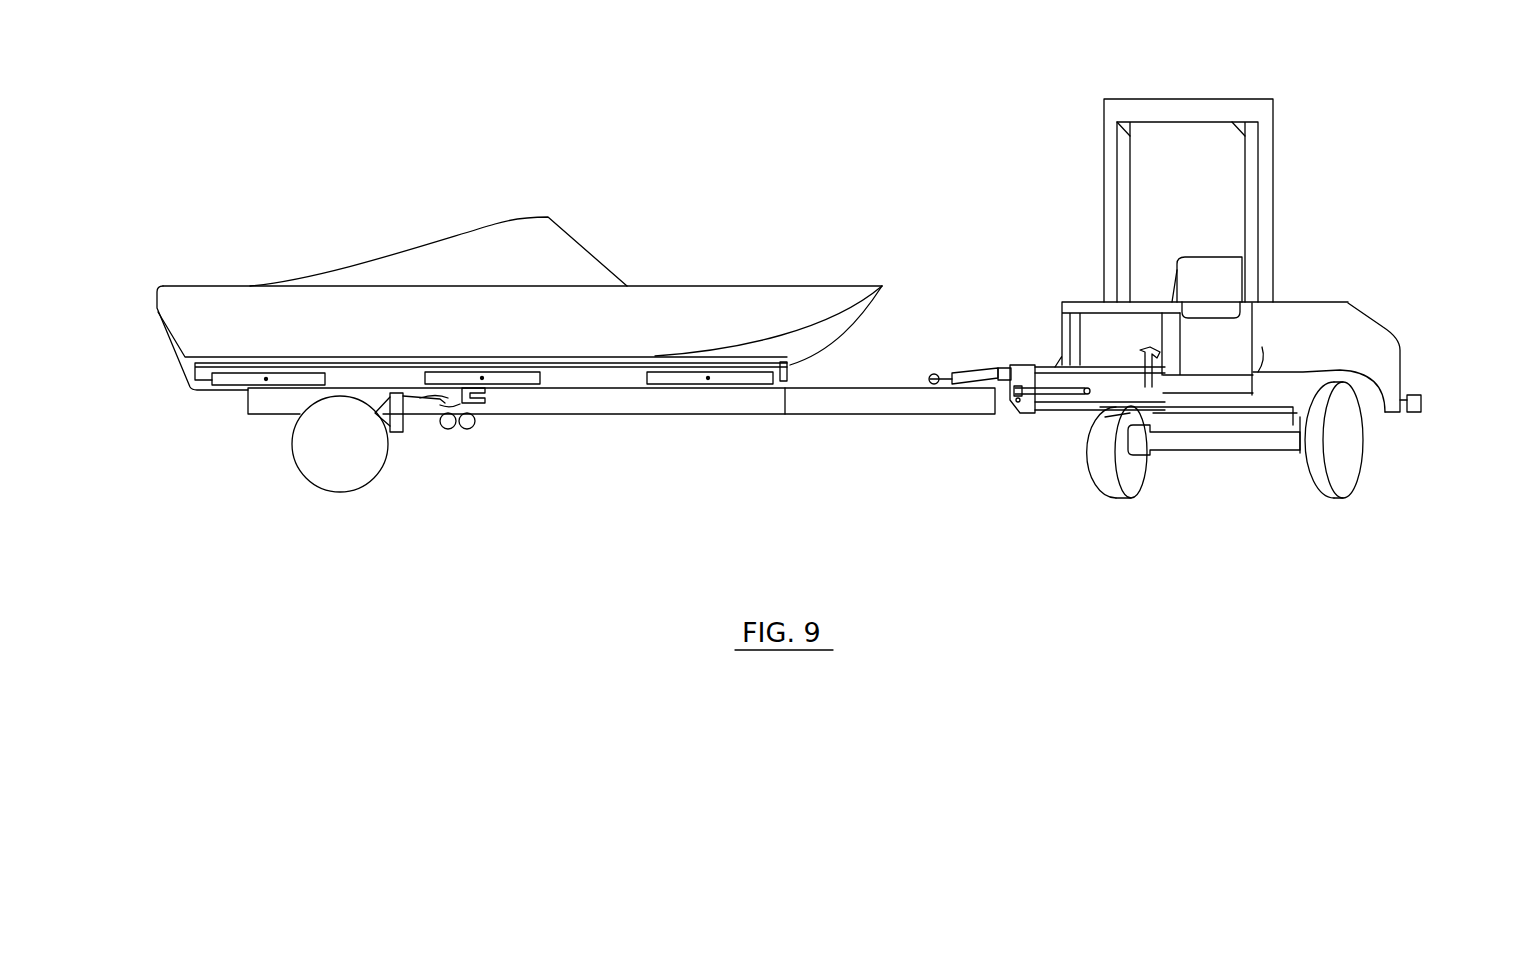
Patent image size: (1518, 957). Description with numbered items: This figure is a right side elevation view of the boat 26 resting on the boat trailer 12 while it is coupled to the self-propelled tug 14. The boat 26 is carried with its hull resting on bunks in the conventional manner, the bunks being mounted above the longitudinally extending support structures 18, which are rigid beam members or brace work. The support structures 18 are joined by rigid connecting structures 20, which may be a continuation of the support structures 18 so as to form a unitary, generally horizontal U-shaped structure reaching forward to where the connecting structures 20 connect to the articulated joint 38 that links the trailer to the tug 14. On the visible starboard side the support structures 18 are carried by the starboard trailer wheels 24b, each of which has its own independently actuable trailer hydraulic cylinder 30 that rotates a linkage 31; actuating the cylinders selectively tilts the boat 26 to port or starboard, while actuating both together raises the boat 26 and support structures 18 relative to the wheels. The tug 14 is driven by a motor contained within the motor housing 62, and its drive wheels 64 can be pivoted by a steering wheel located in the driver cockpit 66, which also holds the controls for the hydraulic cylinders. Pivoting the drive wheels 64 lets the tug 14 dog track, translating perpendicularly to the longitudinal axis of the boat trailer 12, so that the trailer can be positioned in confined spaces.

The boat 26 is at (692, 307).
The connecting structures 20 is at (843, 387).
The articulated joint 38 is at (997, 195).
The driver cockpit 66 is at (1233, 225).
The self-propelled tug 14 is at (1268, 309).
The motor housing 62 is at (1383, 327).
The starboard trailer wheels 24b is at (358, 478).
The linkage 31 is at (407, 418).
The trailer hydraulic cylinder 30 is at (473, 417).
The boat trailer 12 is at (595, 309).
The support structures 18 is at (723, 406).
The drive wheels 64 is at (1107, 498).